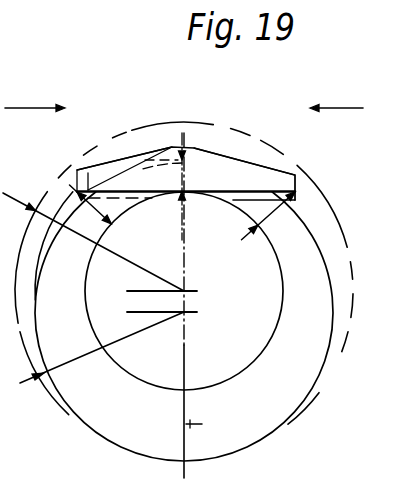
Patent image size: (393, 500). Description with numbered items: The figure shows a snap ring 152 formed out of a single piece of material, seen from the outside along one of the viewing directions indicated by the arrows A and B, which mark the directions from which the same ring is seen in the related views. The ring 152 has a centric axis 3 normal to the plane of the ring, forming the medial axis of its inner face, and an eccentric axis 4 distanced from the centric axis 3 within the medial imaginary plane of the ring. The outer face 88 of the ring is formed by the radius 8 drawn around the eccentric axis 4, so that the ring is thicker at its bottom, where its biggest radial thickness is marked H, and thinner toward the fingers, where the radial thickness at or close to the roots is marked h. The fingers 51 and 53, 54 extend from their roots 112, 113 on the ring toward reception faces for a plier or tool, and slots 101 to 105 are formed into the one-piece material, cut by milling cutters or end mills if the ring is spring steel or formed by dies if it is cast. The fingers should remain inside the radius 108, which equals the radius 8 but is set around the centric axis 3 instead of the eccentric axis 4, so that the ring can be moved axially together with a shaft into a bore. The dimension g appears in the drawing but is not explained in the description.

The centric axis 3 is at (187, 289).
The eccentric axis 4 is at (188, 317).
The radius 8 is at (67, 363).
The finger 51 is at (83, 180).
The finger 53 is at (278, 171).
The finger 54 is at (273, 178).
The outer face 88 is at (321, 368).
The slot 101 is at (226, 191).
The slot 105 is at (134, 193).
The radius 108 is at (63, 228).
The root 112 is at (234, 200).
The root 113 is at (112, 197).
The ring 152 is at (245, 432).
The arrow A is at (35, 97).
The arrow B is at (336, 97).
The gap dimension g is at (170, 186).
The radial thickness of the roots h is at (108, 221).
The biggest radial thickness H is at (202, 425).